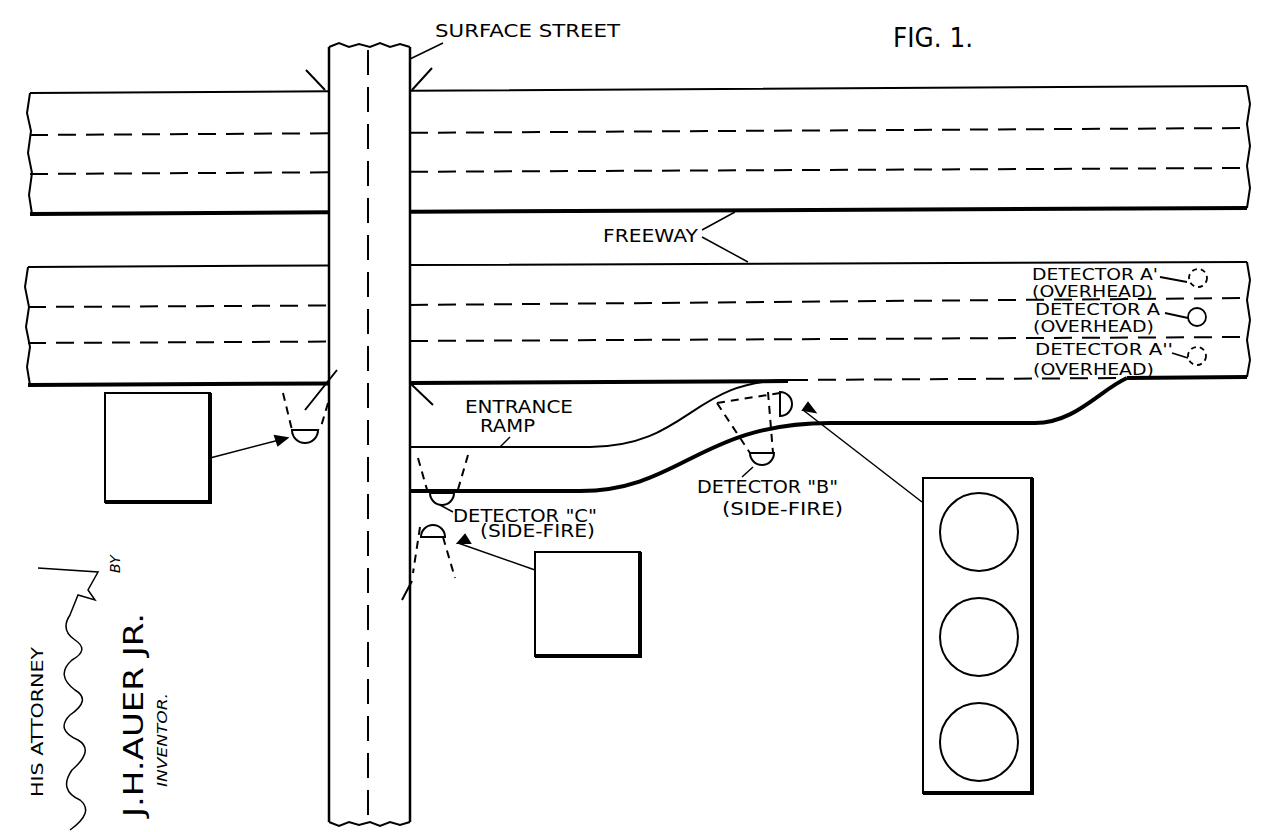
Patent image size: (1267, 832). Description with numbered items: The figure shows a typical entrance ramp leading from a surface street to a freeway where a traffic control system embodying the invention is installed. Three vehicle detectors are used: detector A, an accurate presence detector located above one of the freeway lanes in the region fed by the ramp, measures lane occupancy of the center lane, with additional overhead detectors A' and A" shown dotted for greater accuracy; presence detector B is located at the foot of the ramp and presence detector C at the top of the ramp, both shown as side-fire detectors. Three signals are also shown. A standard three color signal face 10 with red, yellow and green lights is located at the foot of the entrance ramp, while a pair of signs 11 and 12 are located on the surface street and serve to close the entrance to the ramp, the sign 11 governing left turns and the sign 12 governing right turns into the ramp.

The three color signal face 10 is at (797, 402).
The sign 11 is at (212, 480).
The sign 12 is at (535, 598).